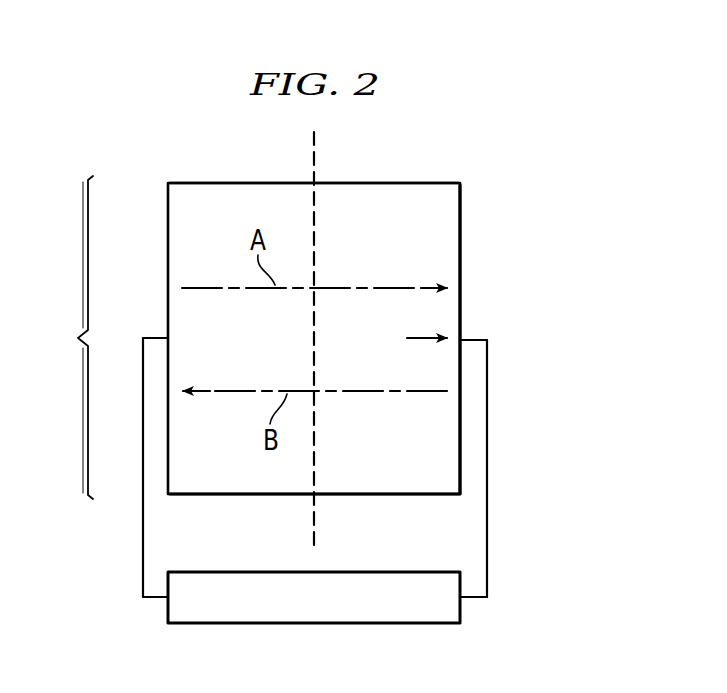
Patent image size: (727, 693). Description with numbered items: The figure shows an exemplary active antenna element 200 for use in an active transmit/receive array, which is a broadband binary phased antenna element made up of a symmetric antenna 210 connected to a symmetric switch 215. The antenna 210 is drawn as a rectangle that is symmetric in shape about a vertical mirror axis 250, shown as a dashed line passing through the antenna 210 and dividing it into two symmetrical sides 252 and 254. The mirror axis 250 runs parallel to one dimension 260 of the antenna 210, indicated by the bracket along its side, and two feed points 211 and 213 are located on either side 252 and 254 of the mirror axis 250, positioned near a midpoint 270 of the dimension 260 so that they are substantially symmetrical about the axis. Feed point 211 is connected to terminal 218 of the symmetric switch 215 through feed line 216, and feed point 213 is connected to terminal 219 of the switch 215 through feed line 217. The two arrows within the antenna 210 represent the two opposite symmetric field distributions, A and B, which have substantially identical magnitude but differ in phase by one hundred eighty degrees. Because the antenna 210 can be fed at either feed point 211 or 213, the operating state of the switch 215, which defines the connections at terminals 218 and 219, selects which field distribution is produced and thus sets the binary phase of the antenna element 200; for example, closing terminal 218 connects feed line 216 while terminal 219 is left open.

The active antenna element 200 is at (482, 111).
The symmetric antenna 210 is at (463, 237).
The first feed point 211 is at (165, 332).
The second feed point 213 is at (465, 333).
The symmetric switch 215 is at (380, 625).
The feed line 216 is at (142, 540).
The feed line 217 is at (488, 470).
The terminal 218 is at (168, 603).
The terminal 219 is at (465, 605).
The mirror axis 250 is at (313, 510).
The first symmetrical side 252 is at (237, 183).
The second symmetrical side 254 is at (393, 183).
The dimension of the antenna 260 is at (58, 337).
The midpoint 270 is at (406, 338).